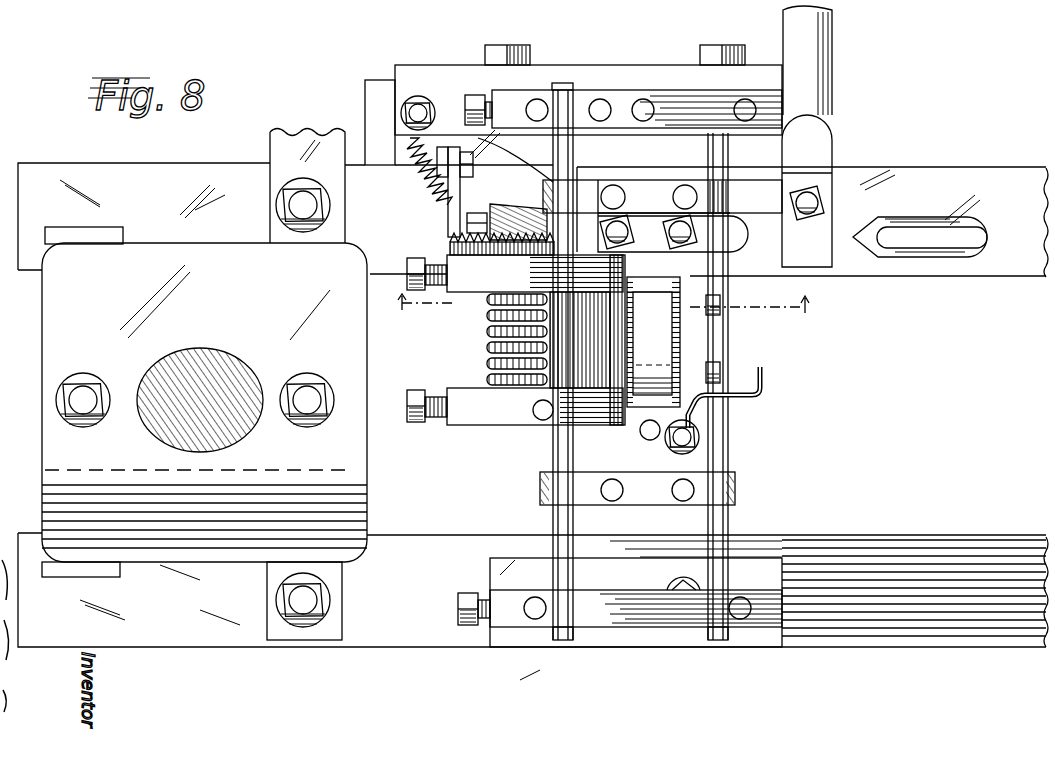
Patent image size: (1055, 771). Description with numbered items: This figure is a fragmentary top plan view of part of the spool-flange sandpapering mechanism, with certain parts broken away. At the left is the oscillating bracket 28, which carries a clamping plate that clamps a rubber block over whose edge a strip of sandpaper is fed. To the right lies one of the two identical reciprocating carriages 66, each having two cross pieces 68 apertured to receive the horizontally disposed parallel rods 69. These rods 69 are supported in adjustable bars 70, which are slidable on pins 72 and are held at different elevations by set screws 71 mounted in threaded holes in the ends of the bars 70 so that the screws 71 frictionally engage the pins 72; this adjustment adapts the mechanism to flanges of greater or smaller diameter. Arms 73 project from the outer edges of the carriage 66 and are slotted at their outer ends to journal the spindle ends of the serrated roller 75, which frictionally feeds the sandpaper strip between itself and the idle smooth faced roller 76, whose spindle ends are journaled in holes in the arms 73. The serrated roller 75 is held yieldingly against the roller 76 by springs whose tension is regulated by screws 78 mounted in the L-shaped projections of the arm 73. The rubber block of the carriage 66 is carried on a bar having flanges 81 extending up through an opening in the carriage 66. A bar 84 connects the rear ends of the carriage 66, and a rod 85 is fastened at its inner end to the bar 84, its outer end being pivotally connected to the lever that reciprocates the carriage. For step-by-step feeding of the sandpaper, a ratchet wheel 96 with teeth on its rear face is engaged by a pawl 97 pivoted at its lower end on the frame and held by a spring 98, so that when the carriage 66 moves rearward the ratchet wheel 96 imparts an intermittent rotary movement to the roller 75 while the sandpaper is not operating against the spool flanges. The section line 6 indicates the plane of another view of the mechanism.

The section line 6- 6 is at (602, 307).
The oscillating bracket 28 is at (204, 402).
The reciprocating carriage 66 is at (700, 478).
The cross piece 68 is at (730, 486).
The rod 69 is at (553, 516).
The adjustable bar 70 is at (585, 100).
The set screw 71 is at (474, 94).
The pin 72 is at (538, 103).
The arm 73 is at (470, 292).
The serrated roller 75 is at (487, 360).
The smooth faced roller 76 is at (572, 372).
The screw 78 is at (420, 425).
The flange 81 is at (628, 345).
The bar 84 is at (845, 240).
The rod 85 is at (825, 60).
The ratchet wheel 96 is at (448, 248).
The pawl 97 is at (425, 195).
The spring 98 is at (418, 183).